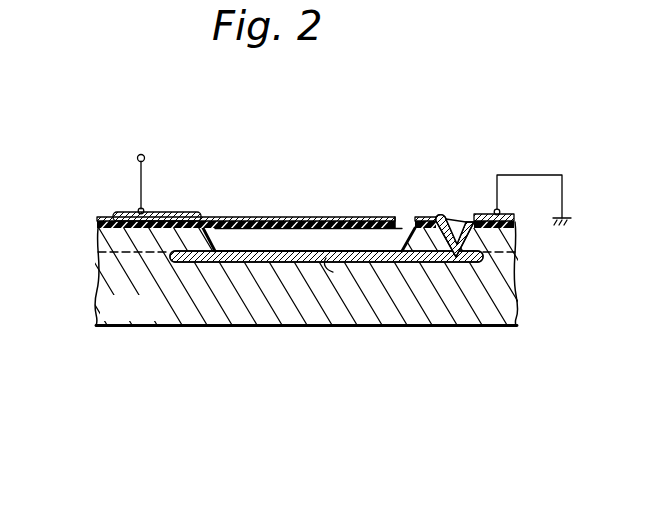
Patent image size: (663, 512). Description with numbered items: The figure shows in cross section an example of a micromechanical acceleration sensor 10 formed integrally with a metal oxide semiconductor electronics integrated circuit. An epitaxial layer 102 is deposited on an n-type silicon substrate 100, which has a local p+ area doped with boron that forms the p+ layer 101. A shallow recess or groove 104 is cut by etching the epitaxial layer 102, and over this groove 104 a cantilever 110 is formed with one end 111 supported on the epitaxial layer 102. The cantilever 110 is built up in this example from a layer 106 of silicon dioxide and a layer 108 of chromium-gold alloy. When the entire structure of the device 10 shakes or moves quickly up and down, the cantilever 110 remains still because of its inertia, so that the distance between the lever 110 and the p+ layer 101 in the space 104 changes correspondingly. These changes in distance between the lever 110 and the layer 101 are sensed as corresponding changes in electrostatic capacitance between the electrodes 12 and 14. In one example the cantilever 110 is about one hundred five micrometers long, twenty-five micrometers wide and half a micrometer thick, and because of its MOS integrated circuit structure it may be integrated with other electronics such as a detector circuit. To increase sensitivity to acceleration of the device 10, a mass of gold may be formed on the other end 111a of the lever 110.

The acceleration sensor 10 is at (408, 108).
The electrode 12 is at (531, 173).
The electrode 14 is at (146, 154).
The n-type silicon substrate 100 is at (233, 316).
The p+ layer 101 is at (308, 247).
The epitaxial layer 102 is at (96, 243).
The recess or groove 104 is at (258, 238).
The silicon dioxide layer 106 is at (316, 221).
The Cr-Au alloy layer 108 is at (363, 216).
The cantilever 110 is at (405, 220).
The supported end of cantilever 111 is at (186, 211).
The other end of cantilever 111a is at (393, 213).